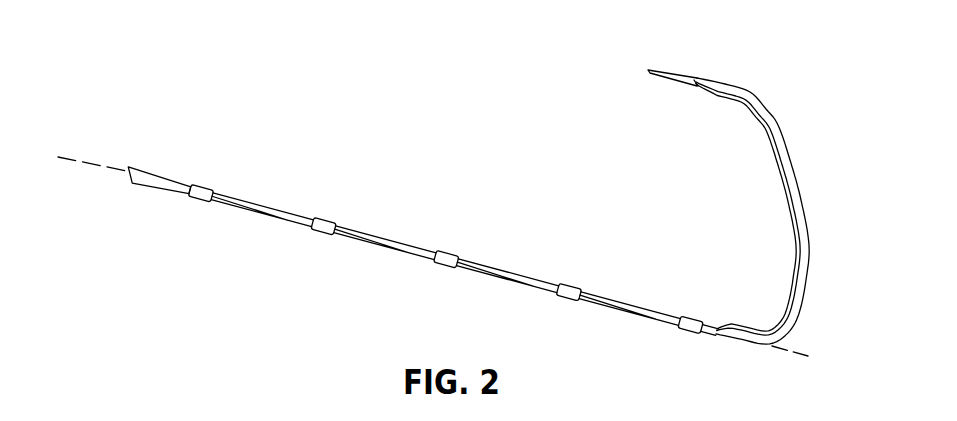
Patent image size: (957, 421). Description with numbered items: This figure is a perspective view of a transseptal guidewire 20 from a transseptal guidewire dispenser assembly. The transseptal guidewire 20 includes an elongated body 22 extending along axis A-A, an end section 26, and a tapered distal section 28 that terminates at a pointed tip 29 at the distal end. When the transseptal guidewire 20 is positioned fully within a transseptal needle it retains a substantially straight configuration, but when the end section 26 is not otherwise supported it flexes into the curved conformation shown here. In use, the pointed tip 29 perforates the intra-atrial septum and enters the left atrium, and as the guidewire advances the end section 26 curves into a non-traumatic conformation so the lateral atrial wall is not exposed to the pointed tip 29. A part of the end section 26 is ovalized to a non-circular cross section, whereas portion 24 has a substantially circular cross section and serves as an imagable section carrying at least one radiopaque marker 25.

The transseptal guidewire 20 is at (502, 97).
The elongated body 22 is at (768, 383).
The portion 24 is at (705, 303).
The radiopaque marker 25 is at (706, 323).
The end section 26 is at (815, 85).
The tapered distal section 28 is at (705, 68).
The pointed tip 29 is at (649, 71).